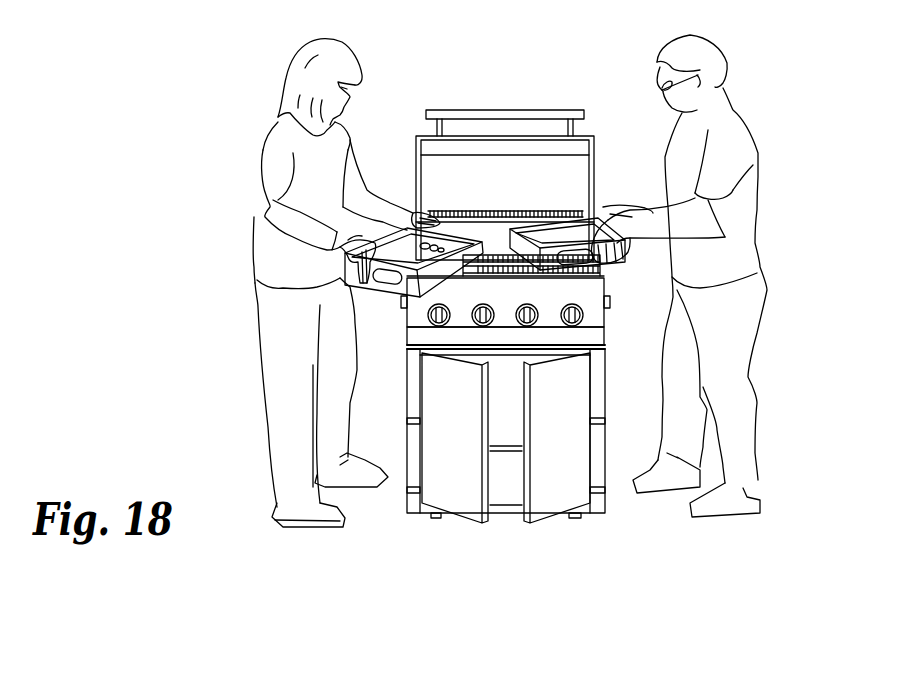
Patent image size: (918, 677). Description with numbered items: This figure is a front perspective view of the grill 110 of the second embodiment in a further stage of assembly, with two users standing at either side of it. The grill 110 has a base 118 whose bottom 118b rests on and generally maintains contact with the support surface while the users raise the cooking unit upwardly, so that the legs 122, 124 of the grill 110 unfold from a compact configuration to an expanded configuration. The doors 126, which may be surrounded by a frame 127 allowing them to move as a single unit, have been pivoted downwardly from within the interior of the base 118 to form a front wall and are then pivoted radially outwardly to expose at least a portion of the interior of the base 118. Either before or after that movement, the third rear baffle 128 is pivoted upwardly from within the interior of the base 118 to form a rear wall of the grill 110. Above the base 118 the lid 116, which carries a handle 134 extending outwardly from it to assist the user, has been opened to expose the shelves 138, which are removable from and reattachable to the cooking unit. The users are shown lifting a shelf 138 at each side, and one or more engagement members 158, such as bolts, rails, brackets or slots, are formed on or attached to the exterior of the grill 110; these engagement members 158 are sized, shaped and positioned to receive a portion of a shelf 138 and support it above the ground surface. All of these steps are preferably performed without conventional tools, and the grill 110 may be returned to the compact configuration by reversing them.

The grill 110 is at (238, 162).
The lid 116 is at (512, 167).
The base 118 is at (512, 445).
The bottom of the base 118b is at (408, 518).
The leg 122 is at (397, 407).
The leg 124 is at (612, 412).
The door 126 is at (414, 460).
The frame 127 is at (520, 353).
The third rear baffle 128 is at (503, 380).
The handle 134 is at (490, 110).
The shelf 138 is at (383, 246).
The engagement member 158 is at (407, 303).